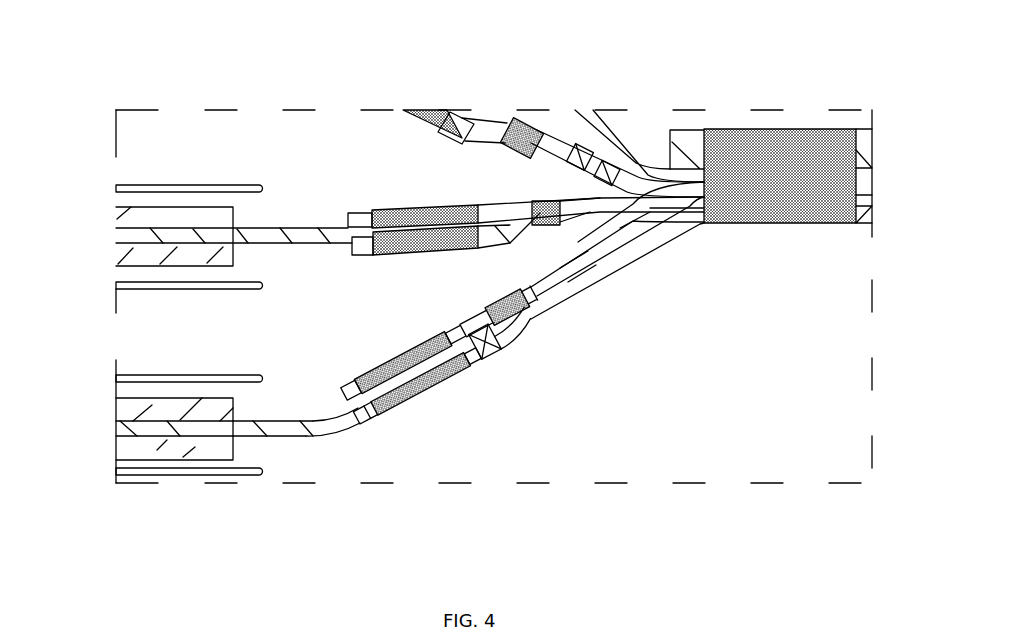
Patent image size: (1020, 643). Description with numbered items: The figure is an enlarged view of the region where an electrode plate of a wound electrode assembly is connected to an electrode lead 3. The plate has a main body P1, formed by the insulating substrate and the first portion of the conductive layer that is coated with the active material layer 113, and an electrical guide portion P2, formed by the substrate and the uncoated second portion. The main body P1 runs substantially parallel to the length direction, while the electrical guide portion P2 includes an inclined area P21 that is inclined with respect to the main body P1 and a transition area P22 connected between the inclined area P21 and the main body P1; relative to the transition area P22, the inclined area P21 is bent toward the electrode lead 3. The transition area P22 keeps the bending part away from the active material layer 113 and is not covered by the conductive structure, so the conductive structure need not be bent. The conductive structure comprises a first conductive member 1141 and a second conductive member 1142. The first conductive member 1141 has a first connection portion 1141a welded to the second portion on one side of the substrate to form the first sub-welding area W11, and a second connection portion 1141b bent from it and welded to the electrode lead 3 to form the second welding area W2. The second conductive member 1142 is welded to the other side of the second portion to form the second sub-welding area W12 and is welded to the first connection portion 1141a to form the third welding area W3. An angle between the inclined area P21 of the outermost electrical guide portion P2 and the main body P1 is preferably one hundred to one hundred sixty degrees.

The second welding area W2 is at (810, 148).
The electrode lead 3 is at (692, 135).
The third welding area W3 is at (537, 137).
The first sub-welding area W11 is at (430, 337).
The second sub-welding area W12 is at (437, 384).
The second conductive member 1142 is at (482, 360).
The first connection portion 1141a is at (578, 258).
The second connection portion 1141b is at (693, 218).
The first conductive member 1141 is at (694, 346).
The active material layer 113 is at (128, 410).
The main body P1 is at (157, 440).
The electrical guide portion P2 is at (328, 486).
The inclined area P21 is at (362, 408).
The transition area P22 is at (275, 427).